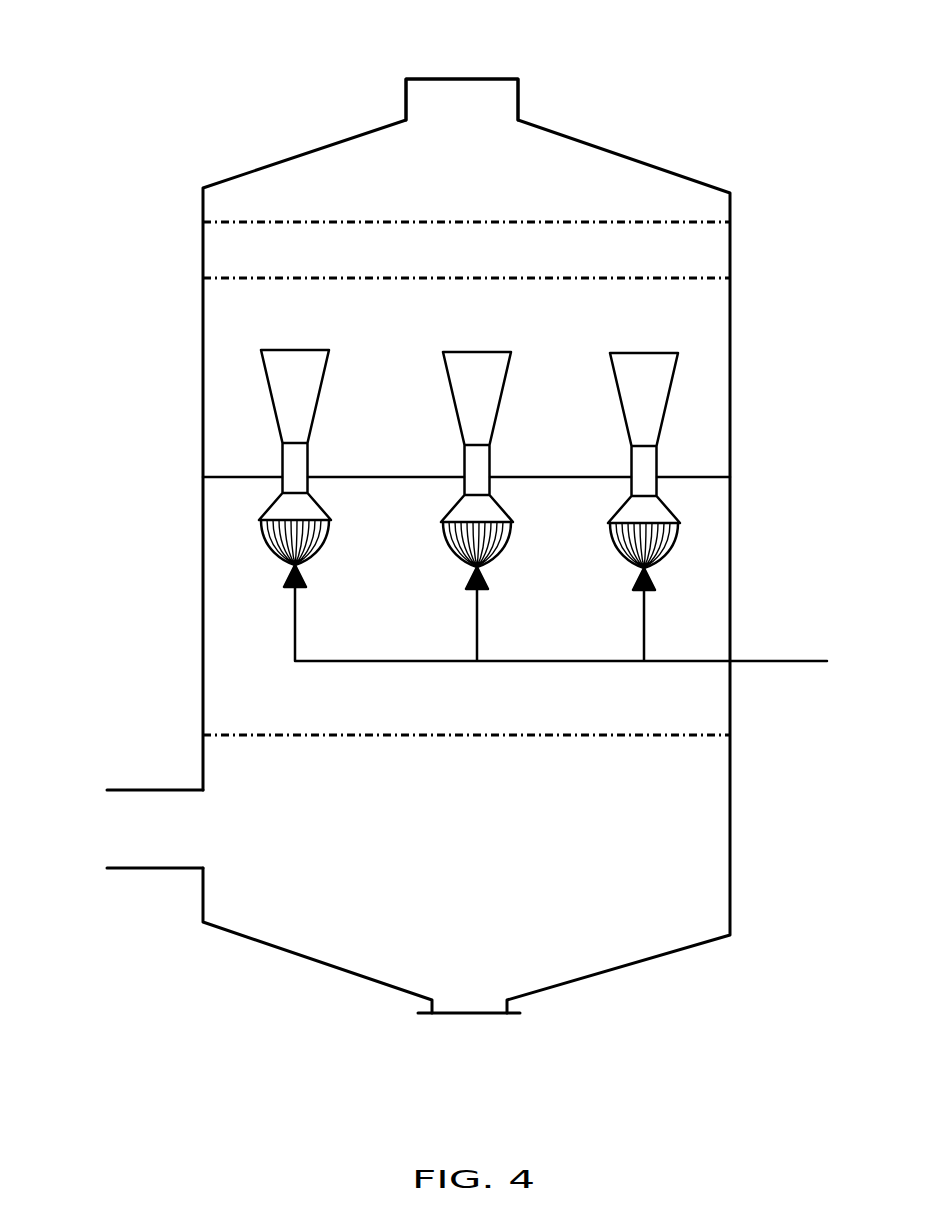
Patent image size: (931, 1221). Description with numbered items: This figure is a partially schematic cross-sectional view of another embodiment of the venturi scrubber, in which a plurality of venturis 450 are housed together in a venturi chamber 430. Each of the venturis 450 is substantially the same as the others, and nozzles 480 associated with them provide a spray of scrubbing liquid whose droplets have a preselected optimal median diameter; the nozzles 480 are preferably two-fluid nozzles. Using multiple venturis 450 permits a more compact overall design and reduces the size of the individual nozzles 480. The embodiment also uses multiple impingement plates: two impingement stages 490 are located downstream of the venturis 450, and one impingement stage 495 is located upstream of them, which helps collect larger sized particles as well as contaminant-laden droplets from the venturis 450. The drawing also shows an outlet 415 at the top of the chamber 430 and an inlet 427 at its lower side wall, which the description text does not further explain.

The gas outlet 415 is at (492, 95).
The liquid inlet 427 is at (150, 817).
The venturi chamber 430 is at (153, 503).
The venturis 450 is at (470, 415).
The nozzles 480 is at (468, 582).
The impingement stages 490 is at (600, 230).
The impingement stage 495 is at (432, 736).